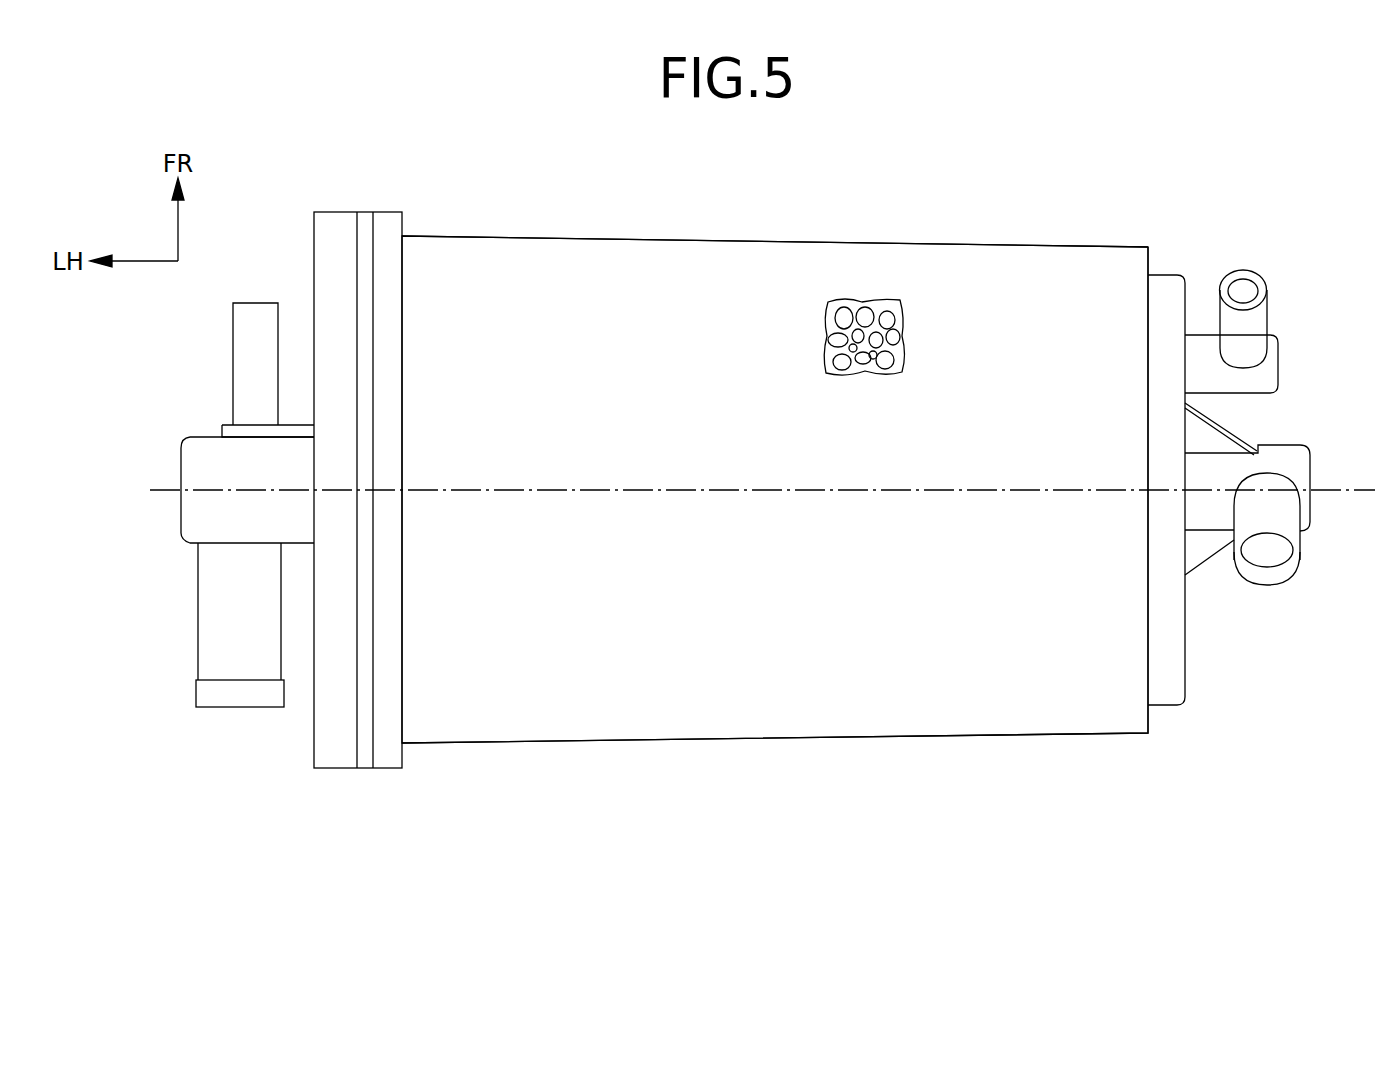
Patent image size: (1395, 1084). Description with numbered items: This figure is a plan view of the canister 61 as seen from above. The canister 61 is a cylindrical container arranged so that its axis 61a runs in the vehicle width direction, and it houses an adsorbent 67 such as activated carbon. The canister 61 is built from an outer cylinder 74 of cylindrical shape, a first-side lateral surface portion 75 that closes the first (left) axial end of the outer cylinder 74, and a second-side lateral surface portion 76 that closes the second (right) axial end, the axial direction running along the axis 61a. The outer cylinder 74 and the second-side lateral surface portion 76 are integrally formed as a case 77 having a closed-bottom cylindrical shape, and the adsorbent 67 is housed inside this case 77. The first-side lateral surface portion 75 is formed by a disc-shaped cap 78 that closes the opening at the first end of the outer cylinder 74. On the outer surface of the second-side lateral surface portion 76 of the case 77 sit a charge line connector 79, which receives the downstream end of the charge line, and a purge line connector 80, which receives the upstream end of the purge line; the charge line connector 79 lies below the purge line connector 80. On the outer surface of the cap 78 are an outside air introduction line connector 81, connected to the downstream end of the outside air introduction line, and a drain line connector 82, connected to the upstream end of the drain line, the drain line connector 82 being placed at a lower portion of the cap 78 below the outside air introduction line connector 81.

The canister 61 is at (644, 156).
The axis 61a is at (893, 490).
The adsorbent 67 is at (845, 310).
The outer cylinder 74 is at (912, 245).
The first-side lateral surface portion 75 is at (314, 598).
The second-side lateral surface portion 76 is at (1188, 430).
The case 77 is at (978, 247).
The cap 78 is at (331, 211).
The charge line connector 79 is at (1267, 293).
The purge line connector 80 is at (1300, 560).
The outside air introduction line connector 81 is at (200, 691).
The drain line connector 82 is at (245, 317).